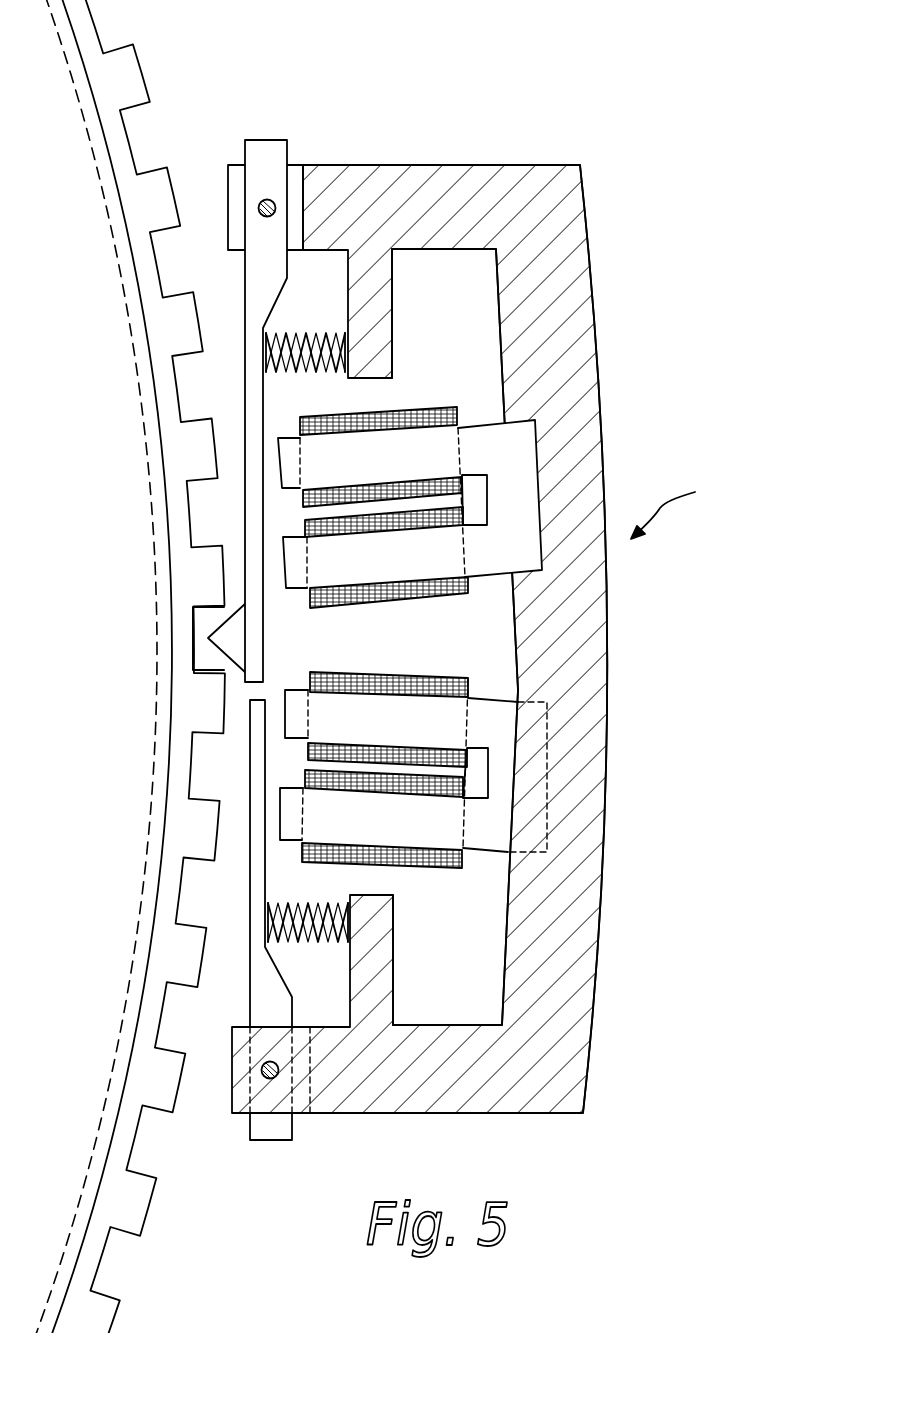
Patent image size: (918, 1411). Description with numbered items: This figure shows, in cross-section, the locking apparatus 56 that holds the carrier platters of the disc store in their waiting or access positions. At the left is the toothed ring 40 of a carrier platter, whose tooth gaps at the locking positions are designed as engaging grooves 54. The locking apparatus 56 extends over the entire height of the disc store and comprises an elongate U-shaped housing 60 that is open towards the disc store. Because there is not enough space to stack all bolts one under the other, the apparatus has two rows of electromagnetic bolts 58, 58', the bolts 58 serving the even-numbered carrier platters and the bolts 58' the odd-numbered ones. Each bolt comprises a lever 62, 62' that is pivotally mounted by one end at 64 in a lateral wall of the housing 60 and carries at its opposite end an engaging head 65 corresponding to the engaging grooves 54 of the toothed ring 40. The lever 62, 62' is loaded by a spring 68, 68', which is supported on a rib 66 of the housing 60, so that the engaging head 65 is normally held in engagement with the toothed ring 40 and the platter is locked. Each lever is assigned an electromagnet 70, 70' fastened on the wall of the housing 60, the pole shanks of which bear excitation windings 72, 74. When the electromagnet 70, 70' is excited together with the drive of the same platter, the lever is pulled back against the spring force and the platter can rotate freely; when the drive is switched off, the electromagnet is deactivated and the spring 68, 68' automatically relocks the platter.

The toothed ring 40 is at (145, 1193).
The engaging grooves 54 is at (222, 645).
The locking apparatus 56 is at (685, 505).
The electromagnetic bolt 58 is at (455, 469).
The electromagnetic bolt 58' is at (455, 857).
The housing 60 is at (601, 790).
The lever 62 is at (171, 411).
The lever 62' is at (168, 920).
The pivot mounting 64 is at (272, 200).
The engaging head 65 is at (227, 630).
The rib 66 is at (403, 263).
The spring 68 is at (350, 231).
The spring 68' is at (260, 967).
The electromagnet 70 is at (479, 500).
The electromagnet 70' is at (489, 763).
The excitation winding 72 is at (433, 597).
The excitation winding 74 is at (423, 407).